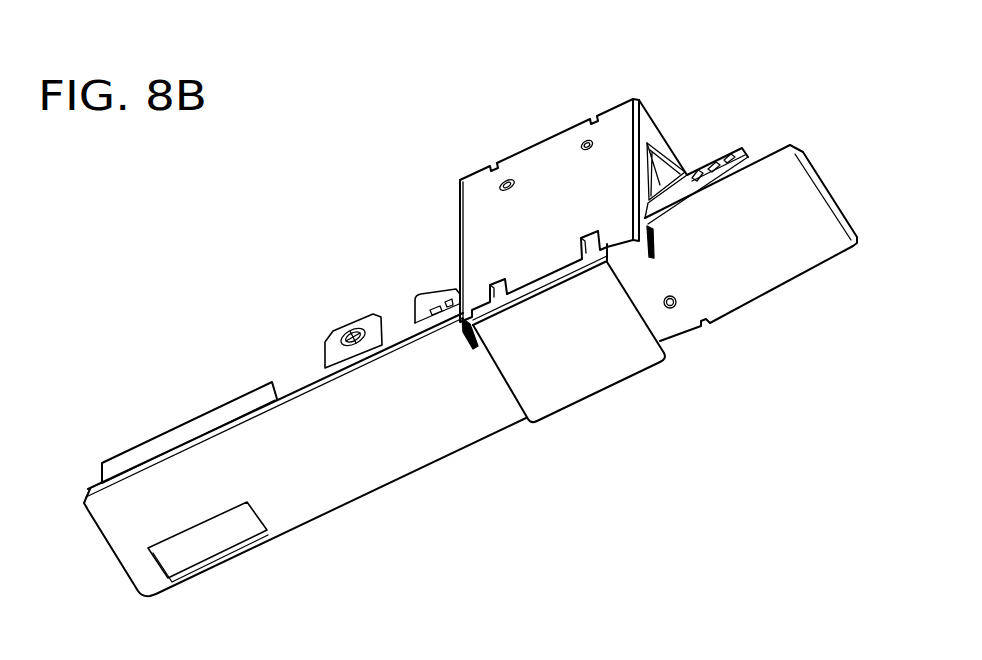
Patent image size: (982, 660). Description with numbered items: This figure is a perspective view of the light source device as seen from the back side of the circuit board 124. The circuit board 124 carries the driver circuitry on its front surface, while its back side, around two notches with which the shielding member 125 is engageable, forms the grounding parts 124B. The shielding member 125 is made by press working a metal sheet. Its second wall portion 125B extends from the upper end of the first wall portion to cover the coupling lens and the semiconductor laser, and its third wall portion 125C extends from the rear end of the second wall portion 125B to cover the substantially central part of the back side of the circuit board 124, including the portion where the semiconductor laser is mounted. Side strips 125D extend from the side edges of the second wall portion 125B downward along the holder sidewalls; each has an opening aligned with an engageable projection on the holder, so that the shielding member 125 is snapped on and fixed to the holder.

The circuit board 124 is at (385, 482).
The grounding parts 124B is at (457, 346).
The shielding member 125 is at (548, 269).
The second wall portion 125B is at (492, 213).
The third wall portion 125C is at (586, 354).
The side strips 125D is at (663, 146).